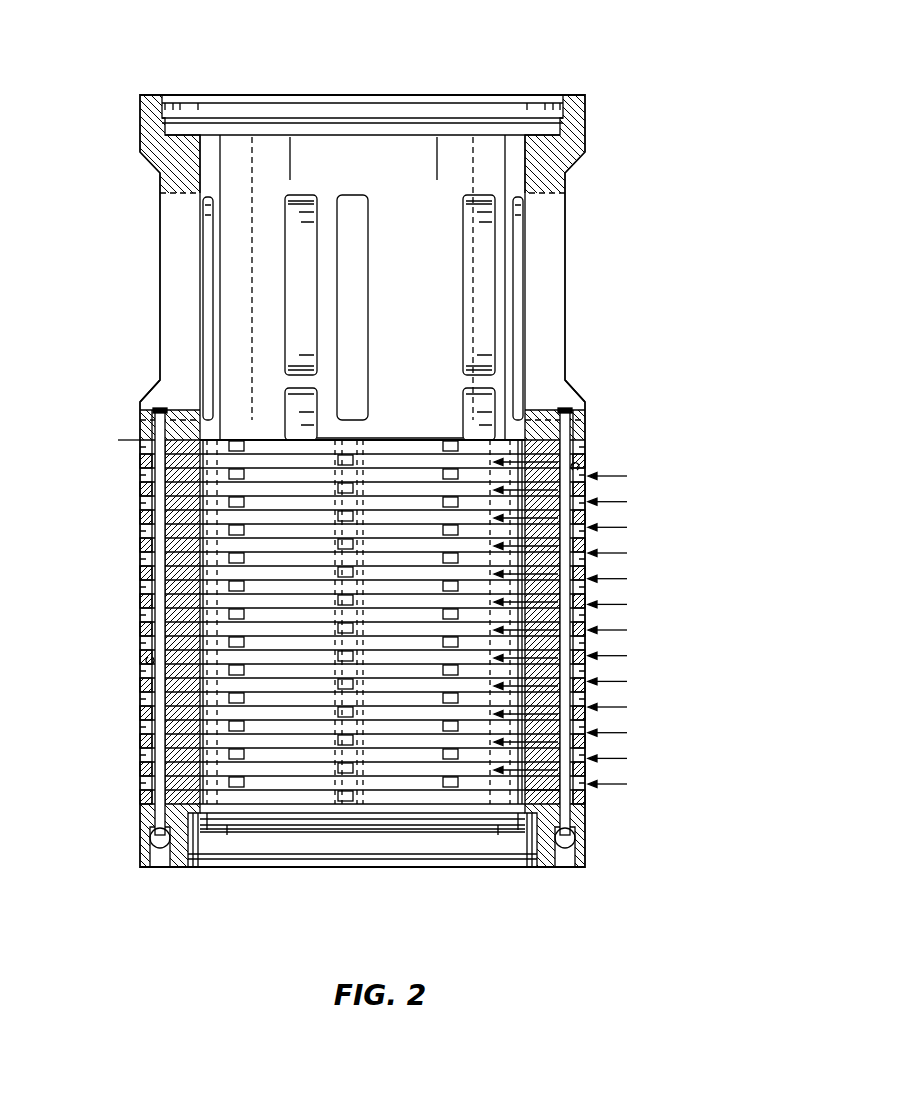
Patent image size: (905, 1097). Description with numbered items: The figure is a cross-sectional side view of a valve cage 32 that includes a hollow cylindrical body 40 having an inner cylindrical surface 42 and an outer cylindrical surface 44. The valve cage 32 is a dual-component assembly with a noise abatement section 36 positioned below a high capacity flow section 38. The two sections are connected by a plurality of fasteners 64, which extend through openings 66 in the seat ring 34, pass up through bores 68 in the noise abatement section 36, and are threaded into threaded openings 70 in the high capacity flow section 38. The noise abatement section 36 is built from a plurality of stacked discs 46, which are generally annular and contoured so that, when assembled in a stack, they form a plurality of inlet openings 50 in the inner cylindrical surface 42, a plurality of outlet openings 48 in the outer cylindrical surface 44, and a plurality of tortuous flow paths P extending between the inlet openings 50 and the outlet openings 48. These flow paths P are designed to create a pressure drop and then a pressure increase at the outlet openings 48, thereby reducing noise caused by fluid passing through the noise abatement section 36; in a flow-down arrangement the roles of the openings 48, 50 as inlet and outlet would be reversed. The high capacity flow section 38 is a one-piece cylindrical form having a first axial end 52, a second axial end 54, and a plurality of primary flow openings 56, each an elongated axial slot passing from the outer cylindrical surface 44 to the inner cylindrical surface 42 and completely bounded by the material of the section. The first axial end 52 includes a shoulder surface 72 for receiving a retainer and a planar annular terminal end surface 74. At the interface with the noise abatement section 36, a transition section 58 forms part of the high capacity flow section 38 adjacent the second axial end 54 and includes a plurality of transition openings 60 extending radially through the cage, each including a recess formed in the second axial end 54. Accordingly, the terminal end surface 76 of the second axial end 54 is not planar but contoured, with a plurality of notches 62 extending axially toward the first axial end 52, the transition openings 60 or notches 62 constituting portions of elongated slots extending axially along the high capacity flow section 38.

The valve cage 32 is at (588, 96).
The seat ring 34 is at (477, 847).
The noise abatement section 36 is at (448, 622).
The high capacity flow section 38 is at (617, 95).
The hollow cylindrical body 40 is at (588, 787).
The inner cylindrical surface 42 is at (160, 867).
The outer cylindrical surface 44 is at (140, 672).
The stacked discs 46 is at (660, 440).
The outlet openings 48 is at (143, 612).
The inlet openings 50 is at (443, 785).
The first axial end 52 is at (140, 95).
The second axial end 54 is at (128, 438).
The primary flow openings 56 is at (517, 197).
The transition section 58 is at (605, 384).
The transition openings 60 is at (286, 418).
The notches 62 is at (466, 418).
The fasteners 64 is at (565, 867).
The openings 66 is at (156, 826).
The bores 68 is at (147, 655).
The threaded openings 70 is at (158, 383).
The shoulder surface 72 is at (186, 138).
The terminal end surface 74 is at (149, 100).
The terminal end surface 76 is at (260, 442).
The tortuous flow paths P is at (618, 465).